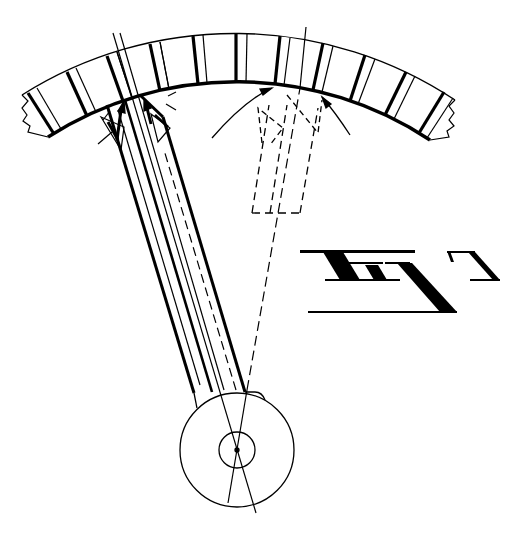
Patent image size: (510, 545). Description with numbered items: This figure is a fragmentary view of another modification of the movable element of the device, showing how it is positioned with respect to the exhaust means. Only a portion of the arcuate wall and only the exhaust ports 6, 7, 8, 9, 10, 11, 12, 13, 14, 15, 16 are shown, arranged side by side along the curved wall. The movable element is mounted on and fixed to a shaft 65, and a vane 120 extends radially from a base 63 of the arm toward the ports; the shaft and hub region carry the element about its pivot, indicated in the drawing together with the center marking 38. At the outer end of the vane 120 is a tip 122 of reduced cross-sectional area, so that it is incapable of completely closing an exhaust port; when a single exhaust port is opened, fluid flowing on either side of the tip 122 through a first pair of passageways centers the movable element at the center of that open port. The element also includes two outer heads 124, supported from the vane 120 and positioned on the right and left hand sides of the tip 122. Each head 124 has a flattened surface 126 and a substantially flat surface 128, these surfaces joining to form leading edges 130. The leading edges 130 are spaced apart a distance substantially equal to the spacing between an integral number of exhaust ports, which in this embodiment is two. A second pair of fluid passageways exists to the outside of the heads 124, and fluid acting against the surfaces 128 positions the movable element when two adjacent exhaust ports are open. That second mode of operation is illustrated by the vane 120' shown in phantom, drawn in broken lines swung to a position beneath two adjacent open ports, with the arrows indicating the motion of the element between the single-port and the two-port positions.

The exhaust port 6 is at (70, 104).
The exhaust port 7 is at (108, 89).
The exhaust port 8 is at (137, 88).
The exhaust port 9 is at (172, 82).
The exhaust port 10 is at (208, 76).
The exhaust port 11 is at (244, 75).
The exhaust port 12 is at (288, 46).
The exhaust port 13 is at (325, 86).
The exhaust port 14 is at (365, 99).
The exhaust port 15 is at (400, 114).
The exhaust port 16 is at (438, 119).
The pivot shaft 38 is at (240, 449).
The base 63 is at (202, 477).
The shaft 65 is at (225, 448).
The vane 120 is at (186, 252).
The vane in phantom 120' is at (266, 265).
The tip 122 is at (174, 264).
The outer heads 124 is at (110, 146).
The flattened surface 126 is at (112, 88).
The flat surface 128 is at (98, 145).
The leading edges 130 is at (104, 118).